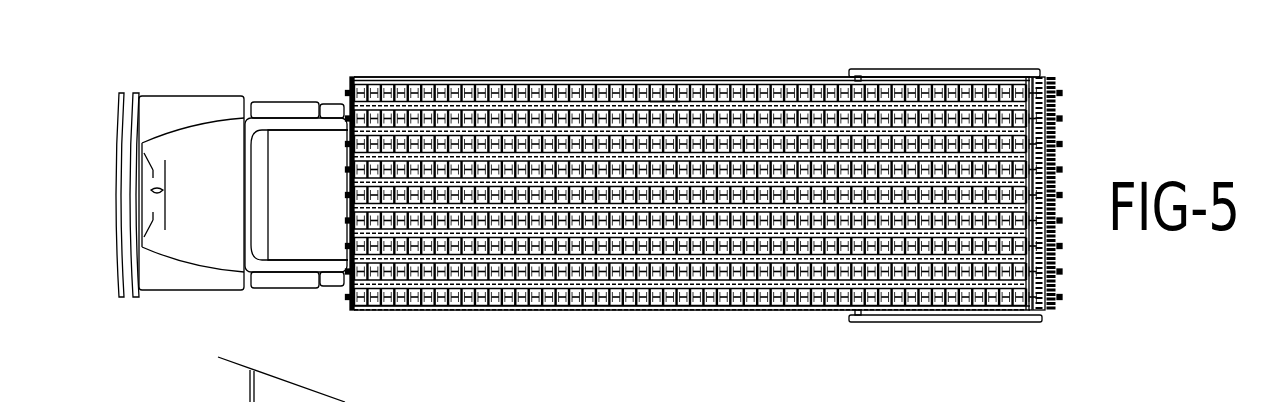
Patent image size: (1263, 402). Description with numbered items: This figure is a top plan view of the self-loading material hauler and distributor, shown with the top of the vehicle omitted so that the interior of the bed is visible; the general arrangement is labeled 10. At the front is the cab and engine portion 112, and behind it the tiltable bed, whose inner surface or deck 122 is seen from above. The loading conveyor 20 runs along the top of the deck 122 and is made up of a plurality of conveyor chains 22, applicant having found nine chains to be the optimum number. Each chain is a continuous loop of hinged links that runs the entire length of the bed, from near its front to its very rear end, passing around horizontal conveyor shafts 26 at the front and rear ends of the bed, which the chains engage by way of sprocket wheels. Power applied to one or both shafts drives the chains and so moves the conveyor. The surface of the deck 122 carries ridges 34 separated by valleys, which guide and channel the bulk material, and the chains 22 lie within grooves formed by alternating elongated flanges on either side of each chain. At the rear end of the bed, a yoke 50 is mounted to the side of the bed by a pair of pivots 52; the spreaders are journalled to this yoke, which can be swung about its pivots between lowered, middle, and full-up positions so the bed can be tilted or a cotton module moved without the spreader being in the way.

The vehicle system 10 is at (330, 311).
The loading conveyor 20 is at (706, 312).
The conveyor chains 22 is at (808, 92).
The conveyor shafts 26 is at (352, 306).
The ridges 34 is at (402, 88).
The yoke 50 is at (1001, 326).
The pivots 52 is at (852, 322).
The cab and engine portion 112 is at (265, 78).
The deck 122 is at (670, 100).